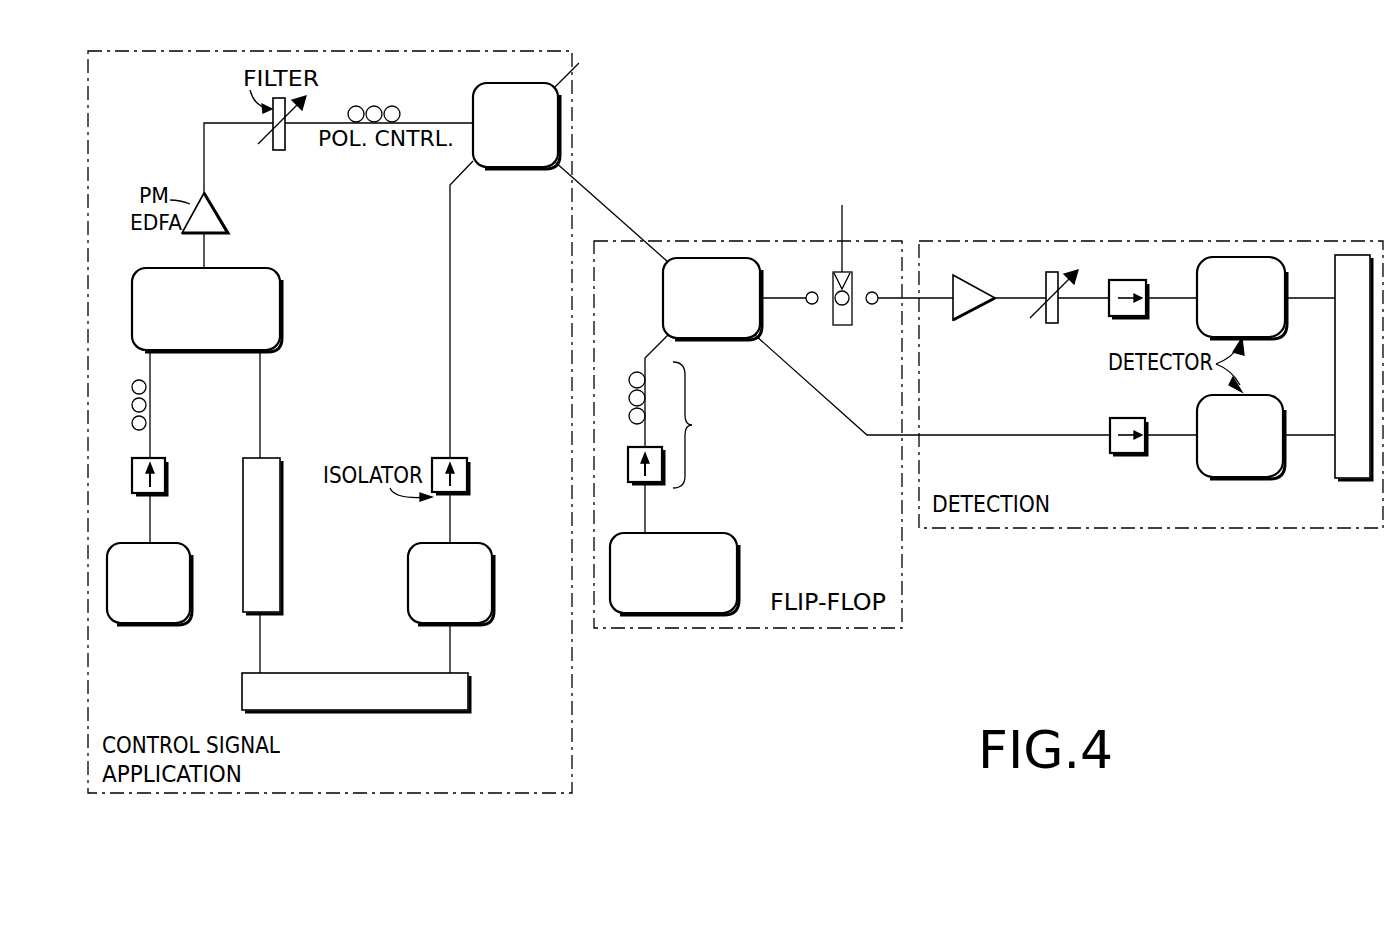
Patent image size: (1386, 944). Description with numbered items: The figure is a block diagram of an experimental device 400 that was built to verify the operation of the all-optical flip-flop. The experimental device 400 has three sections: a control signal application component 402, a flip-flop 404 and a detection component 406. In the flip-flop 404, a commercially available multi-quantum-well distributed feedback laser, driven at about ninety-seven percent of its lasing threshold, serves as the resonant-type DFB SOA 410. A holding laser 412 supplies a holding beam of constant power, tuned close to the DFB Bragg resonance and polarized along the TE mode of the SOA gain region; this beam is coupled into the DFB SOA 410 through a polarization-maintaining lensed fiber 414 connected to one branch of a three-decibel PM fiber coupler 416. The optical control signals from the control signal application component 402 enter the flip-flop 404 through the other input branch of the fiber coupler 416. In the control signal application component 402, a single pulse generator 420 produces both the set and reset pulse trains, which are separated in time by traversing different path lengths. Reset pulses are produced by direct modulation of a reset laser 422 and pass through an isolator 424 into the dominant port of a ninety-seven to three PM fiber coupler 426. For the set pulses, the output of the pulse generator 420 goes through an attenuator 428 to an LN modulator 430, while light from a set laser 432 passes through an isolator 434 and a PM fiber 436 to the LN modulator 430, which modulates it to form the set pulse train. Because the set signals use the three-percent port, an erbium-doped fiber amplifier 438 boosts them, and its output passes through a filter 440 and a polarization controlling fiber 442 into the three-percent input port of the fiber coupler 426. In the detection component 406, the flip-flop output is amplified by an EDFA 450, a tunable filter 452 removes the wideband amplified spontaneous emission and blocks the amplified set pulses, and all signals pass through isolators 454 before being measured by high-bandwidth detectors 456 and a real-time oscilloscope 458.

The experimental device 400 is at (1145, 608).
The control signal application component 402 is at (572, 738).
The flip-flop 404 is at (843, 630).
The detection component 406 is at (1197, 530).
The DFB SOA 410 is at (940, 208).
The holding laser 412 is at (737, 548).
The polarization-maintaining lensed fiber 414 is at (742, 438).
The 3-dB PM fiber coupler 416 is at (663, 285).
The pulse generator 420 is at (352, 673).
The reset laser 422 is at (492, 557).
The isolator 424 is at (467, 470).
The 97/3 PM fiber coupler 426 is at (488, 167).
The attenuator 428 is at (280, 466).
The LN modulator 430 is at (280, 287).
The set laser 432 is at (206, 540).
The isolator 434 is at (165, 466).
The PM fiber 436 is at (150, 403).
The erbium-doped fiber amplifier 438 is at (220, 219).
The filter 440 is at (281, 150).
The polarization controlling fiber 442 is at (392, 106).
The EDFA 450 is at (968, 320).
The tunable filter 452 is at (1052, 323).
The isolators 454 is at (1163, 272).
The detectors 456 is at (1253, 257).
The real-time oscilloscope 458 is at (1335, 376).